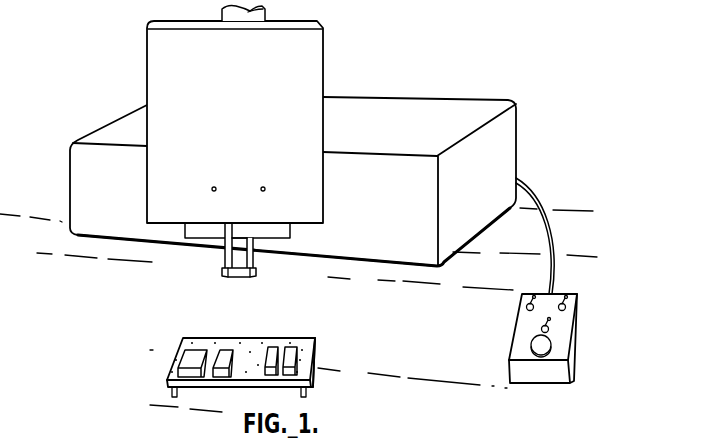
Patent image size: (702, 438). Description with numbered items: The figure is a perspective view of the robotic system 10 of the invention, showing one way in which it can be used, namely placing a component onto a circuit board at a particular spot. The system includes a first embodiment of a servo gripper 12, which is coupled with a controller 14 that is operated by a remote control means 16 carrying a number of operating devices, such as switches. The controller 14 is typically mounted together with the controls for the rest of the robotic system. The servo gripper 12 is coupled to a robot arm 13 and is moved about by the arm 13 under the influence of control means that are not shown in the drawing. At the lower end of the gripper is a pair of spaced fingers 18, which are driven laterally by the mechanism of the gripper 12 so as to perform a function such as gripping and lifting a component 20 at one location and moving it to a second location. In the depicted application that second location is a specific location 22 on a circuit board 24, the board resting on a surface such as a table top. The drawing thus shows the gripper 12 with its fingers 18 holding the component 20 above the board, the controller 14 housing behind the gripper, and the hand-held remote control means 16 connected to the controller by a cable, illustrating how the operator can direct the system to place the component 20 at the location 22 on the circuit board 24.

The robotic system 10 is at (431, 75).
The servo gripper 12 is at (323, 82).
The robot arm 13 is at (265, 12).
The controller 14 is at (484, 99).
The remote control means 16 is at (580, 319).
The spaced fingers 18 is at (222, 263).
The component 20 is at (240, 279).
The specific location 22 is at (252, 350).
The circuit board 24 is at (318, 357).